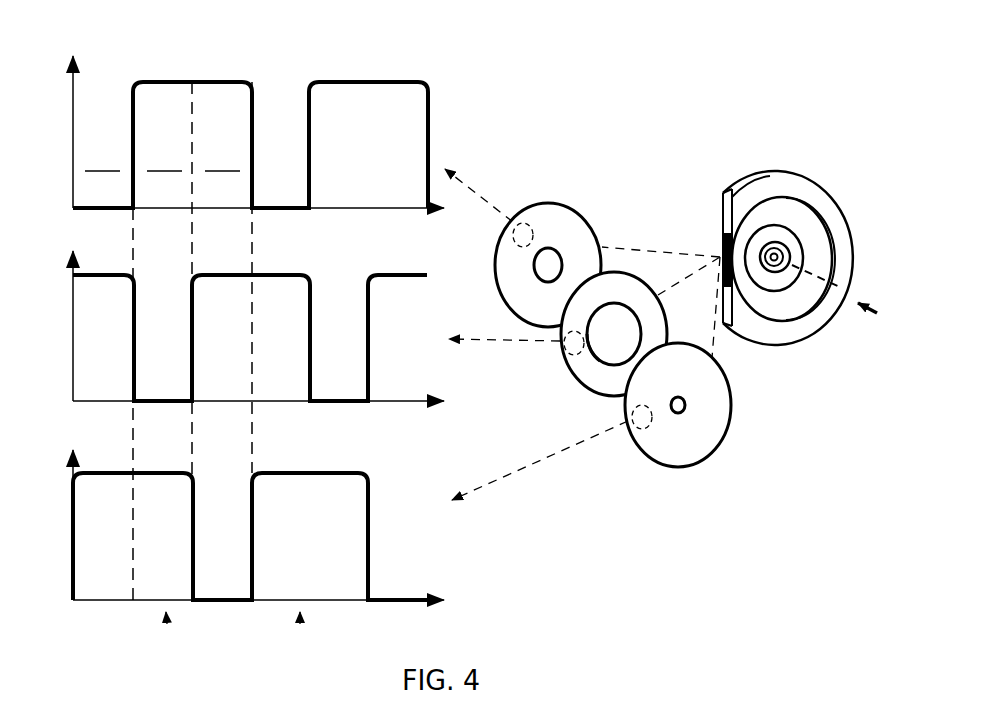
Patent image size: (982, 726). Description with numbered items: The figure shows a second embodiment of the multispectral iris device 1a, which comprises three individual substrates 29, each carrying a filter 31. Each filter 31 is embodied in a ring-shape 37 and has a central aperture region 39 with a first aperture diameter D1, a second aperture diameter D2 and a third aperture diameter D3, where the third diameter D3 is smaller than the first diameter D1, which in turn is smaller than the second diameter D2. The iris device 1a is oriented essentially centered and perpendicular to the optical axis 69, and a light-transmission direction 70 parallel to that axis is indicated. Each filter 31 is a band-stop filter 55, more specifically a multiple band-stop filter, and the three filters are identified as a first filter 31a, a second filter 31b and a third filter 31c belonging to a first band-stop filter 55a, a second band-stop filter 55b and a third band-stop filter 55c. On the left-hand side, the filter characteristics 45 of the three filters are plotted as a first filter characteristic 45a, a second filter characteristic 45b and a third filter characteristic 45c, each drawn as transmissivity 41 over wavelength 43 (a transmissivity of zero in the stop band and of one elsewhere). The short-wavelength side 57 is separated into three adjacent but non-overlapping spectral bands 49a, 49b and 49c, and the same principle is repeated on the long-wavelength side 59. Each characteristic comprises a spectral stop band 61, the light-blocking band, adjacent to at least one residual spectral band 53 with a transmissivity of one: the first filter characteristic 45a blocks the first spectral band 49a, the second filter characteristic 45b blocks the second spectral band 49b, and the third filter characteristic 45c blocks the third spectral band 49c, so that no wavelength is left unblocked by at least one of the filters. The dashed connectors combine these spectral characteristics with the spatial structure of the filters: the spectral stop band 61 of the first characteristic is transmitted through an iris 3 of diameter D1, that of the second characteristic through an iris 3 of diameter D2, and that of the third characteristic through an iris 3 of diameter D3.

The multispectral iris device 1a is at (798, 186).
The iris 3 is at (642, 302).
The first aperture diameter D1 is at (546, 249).
The second aperture diameter D2 is at (593, 366).
The third aperture diameter D3 is at (685, 404).
The substrate 29 is at (619, 336).
The filter 31 is at (619, 336).
The ring-shape 37 is at (619, 336).
The band-stop filter 55 is at (619, 336).
The first band-stop filter 55a is at (553, 204).
The second band-stop filter 55b is at (625, 273).
The third band-stop filter 55c is at (680, 467).
The first filter 31a is at (503, 252).
The second filter 31b is at (566, 350).
The third filter 31c is at (648, 465).
The central aperture region 39 is at (623, 336).
The transmissivity 41 is at (73, 164).
The time axis 43 is at (392, 209).
The filter characteristics 45 is at (249, 317).
The first filter characteristic 45a is at (160, 81).
The second filter characteristic 45b is at (107, 274).
The third filter characteristic 45c is at (107, 472).
The first spectral band 49a is at (102, 159).
The second spectral band 49b is at (164, 159).
The third spectral band 49c is at (222, 159).
The residual spectral band 53 is at (249, 317).
The short-wavelength side 57 is at (166, 632).
The long-wavelength side 59 is at (301, 633).
The spectral stop band 61 is at (232, 317).
The optical axis 69 is at (832, 290).
The light-transmission direction 70 is at (866, 295).